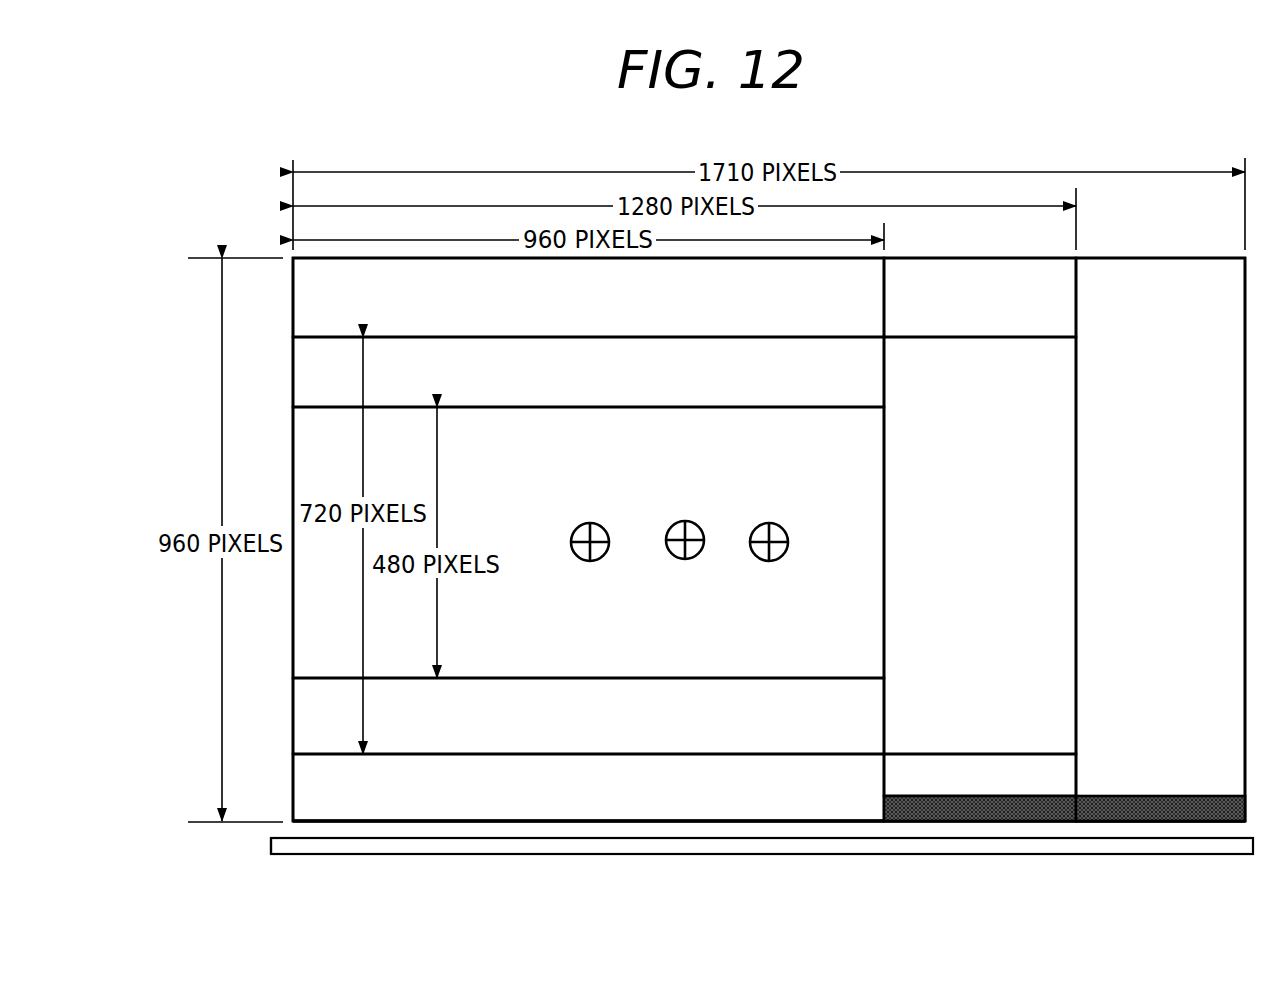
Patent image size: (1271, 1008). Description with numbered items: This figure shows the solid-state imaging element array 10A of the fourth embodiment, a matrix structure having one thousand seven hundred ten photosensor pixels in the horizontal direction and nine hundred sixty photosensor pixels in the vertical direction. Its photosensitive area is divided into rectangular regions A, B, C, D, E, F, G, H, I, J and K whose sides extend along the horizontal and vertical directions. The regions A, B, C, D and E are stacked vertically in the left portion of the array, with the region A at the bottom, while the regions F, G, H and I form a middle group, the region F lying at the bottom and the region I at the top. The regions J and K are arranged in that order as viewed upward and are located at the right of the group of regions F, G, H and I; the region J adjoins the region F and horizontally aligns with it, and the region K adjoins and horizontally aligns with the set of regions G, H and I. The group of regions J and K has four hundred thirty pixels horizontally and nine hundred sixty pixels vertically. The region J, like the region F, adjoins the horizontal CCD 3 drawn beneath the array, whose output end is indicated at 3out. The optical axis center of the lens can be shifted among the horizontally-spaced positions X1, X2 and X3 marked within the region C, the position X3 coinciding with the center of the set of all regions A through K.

The solid-state imaging element array 10A is at (1013, 160).
The horizontal CCD 3 is at (918, 849).
The horizontal CCD output 3out is at (272, 847).
The optical axis center position X1 is at (608, 535).
The optical axis center position X2 is at (703, 533).
The optical axis center position X3 is at (787, 535).
The region A is at (588, 787).
The region B is at (588, 716).
The region C is at (588, 542).
The region D is at (588, 372).
The region E is at (588, 297).
The region F is at (1037, 806).
The region G is at (980, 775).
The region H is at (980, 545).
The region I is at (980, 297).
The region J is at (1208, 806).
The region K is at (1160, 539).